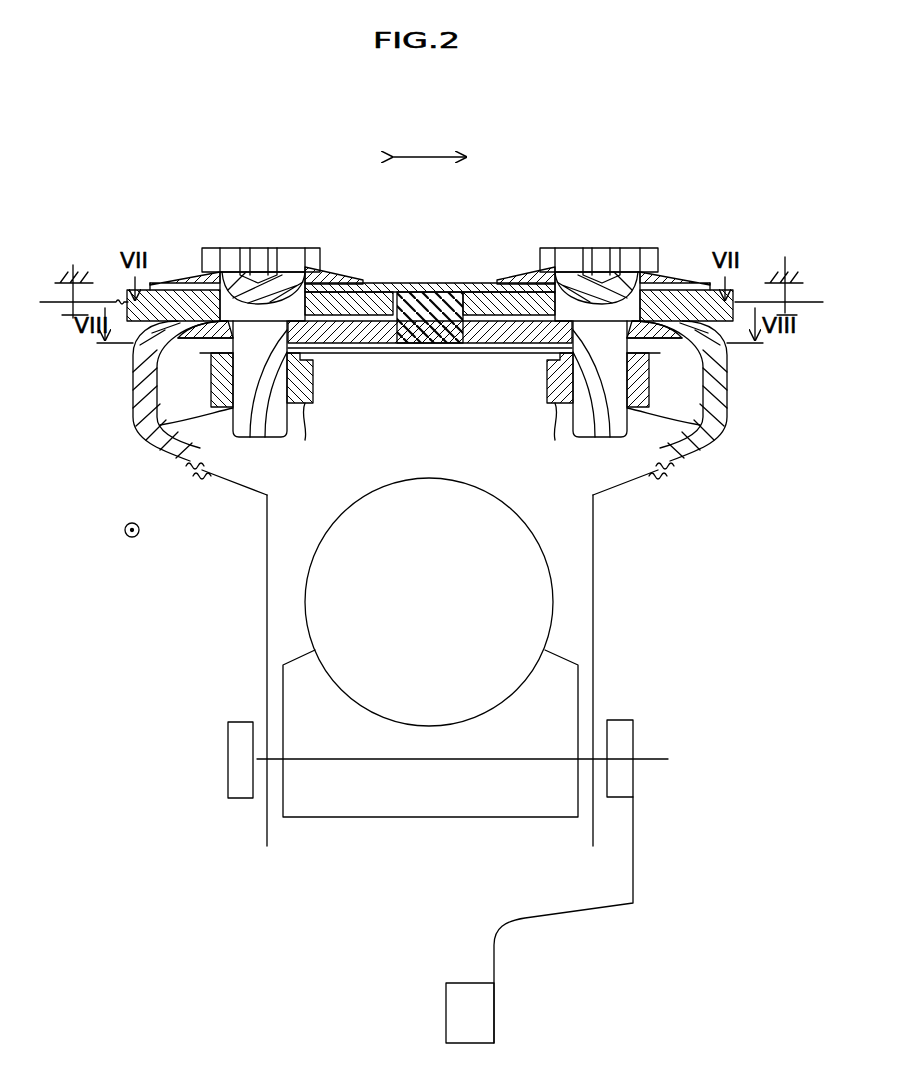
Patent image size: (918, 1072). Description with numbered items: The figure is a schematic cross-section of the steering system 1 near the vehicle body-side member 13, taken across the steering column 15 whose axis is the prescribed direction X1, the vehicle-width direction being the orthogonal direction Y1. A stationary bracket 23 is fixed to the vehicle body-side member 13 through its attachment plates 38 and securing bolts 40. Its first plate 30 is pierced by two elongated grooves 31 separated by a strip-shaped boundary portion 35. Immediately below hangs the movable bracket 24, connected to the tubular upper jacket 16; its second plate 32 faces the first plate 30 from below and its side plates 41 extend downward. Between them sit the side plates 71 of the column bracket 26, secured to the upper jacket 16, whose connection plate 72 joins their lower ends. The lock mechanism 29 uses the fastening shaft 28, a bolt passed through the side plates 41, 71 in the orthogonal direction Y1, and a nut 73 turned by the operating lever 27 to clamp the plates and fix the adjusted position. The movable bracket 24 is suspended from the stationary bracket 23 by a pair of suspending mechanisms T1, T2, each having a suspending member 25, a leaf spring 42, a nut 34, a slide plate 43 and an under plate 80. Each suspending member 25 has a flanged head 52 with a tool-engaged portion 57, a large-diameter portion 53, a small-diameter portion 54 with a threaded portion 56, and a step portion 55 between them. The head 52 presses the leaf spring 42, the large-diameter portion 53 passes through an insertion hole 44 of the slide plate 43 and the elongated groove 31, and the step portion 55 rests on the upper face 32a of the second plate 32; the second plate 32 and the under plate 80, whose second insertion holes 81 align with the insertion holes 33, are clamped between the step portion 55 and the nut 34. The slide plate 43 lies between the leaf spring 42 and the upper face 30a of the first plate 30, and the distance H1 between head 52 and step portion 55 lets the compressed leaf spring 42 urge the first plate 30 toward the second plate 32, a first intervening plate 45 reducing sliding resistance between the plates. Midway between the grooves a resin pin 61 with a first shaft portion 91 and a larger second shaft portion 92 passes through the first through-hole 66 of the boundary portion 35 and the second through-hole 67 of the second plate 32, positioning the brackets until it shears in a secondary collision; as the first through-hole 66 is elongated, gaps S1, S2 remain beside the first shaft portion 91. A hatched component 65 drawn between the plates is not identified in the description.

The steering system 1 is at (707, 157).
The vehicle body-side member 13 is at (78, 283).
The steering column 15 is at (335, 517).
The upper jacket 16 is at (520, 517).
The stationary bracket 23 is at (473, 292).
The movable bracket 24 is at (265, 632).
The suspending member 25 is at (217, 245).
The column bracket 26 is at (374, 818).
The operating lever 27 is at (494, 1020).
The fastening shaft 28 is at (240, 778).
The lock mechanism 29 is at (665, 822).
The first plate 30 is at (494, 350).
The upper face of the first plate 30a is at (465, 293).
The elongated grooves 31 is at (340, 288).
The second plate 32 is at (298, 393).
The upper face of the second plate 32a is at (362, 395).
The insertion holes 33 is at (245, 437).
The nut 34 is at (430, 433).
The boundary portion 35 is at (488, 292).
The attachment plates 38 is at (55, 300).
The securing bolts 40 is at (62, 302).
The side plates 41 is at (267, 568).
The leaf spring 42 is at (315, 280).
The slide plate 43 is at (388, 290).
The insertion holes 44 is at (302, 283).
The first intervening plate 45 is at (380, 353).
The head 52 is at (210, 270).
The large-diameter portion 53 is at (233, 290).
The small-diameter portion 54 is at (233, 377).
The step portion 55 is at (152, 362).
The threaded portion 56 is at (152, 423).
The tool-engaged portion 57 is at (258, 262).
The pin 61 is at (498, 533).
The block 65 is at (430, 292).
The first through-hole 66 is at (478, 352).
The second through-hole 67 is at (392, 353).
The side plates 71 is at (283, 728).
The connection plate 72 is at (455, 818).
The nut 73 is at (633, 733).
The under plate 80 is at (498, 372).
The second insertion holes 81 is at (275, 420).
The first shaft portion 91 is at (466, 350).
The second shaft portion 92 is at (432, 350).
The distance between head and step portion H1 is at (172, 283).
The gap S1 is at (393, 292).
The gap S2 is at (478, 290).
The suspending mechanism T1 is at (287, 245).
The suspending mechanism T2 is at (566, 245).
The prescribed direction X1 is at (131, 538).
The orthogonal direction Y1 is at (430, 155).